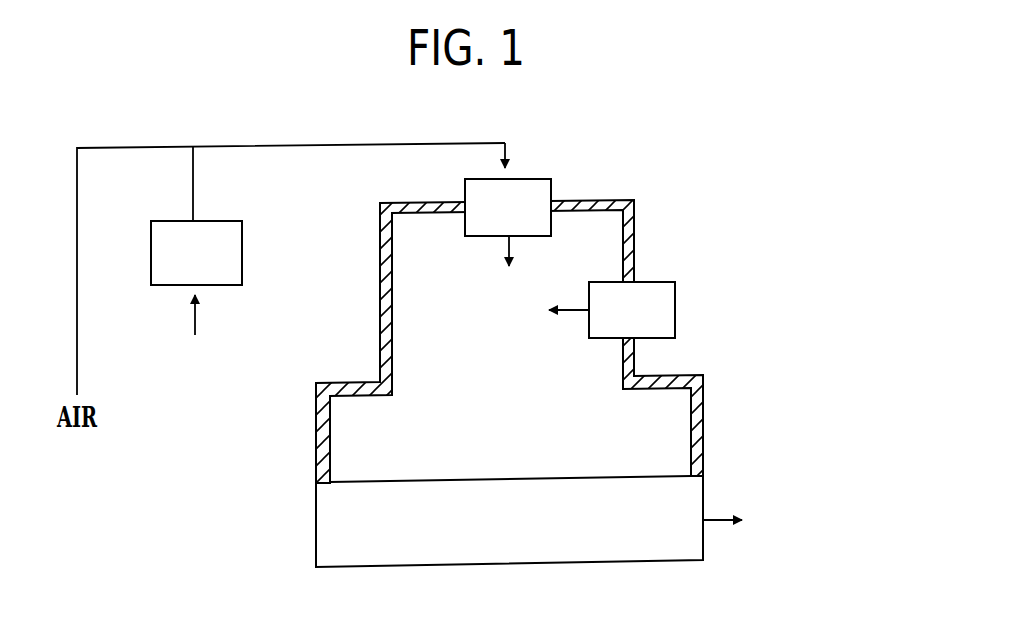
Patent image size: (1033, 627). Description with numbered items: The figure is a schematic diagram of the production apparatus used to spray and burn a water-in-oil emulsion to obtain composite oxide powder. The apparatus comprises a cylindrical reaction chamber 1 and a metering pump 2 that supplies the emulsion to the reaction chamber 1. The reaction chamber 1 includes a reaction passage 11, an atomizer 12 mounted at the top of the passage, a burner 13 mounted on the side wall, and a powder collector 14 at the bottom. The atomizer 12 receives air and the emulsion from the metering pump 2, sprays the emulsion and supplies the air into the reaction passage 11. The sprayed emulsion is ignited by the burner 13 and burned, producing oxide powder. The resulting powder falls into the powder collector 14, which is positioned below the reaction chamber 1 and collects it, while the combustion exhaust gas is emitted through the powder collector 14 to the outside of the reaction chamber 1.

The reaction chamber 1 is at (634, 208).
The reaction passage 11 is at (603, 254).
The atomizer 12 is at (537, 193).
The burner 13 is at (675, 299).
The powder collector 14 is at (330, 504).
The metering pump 2 is at (230, 243).